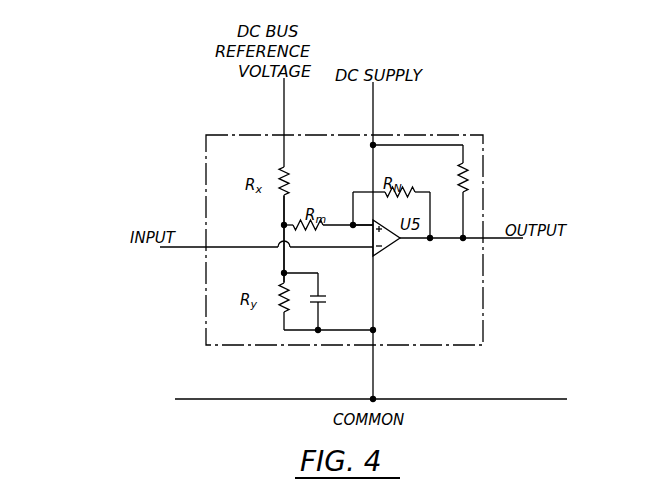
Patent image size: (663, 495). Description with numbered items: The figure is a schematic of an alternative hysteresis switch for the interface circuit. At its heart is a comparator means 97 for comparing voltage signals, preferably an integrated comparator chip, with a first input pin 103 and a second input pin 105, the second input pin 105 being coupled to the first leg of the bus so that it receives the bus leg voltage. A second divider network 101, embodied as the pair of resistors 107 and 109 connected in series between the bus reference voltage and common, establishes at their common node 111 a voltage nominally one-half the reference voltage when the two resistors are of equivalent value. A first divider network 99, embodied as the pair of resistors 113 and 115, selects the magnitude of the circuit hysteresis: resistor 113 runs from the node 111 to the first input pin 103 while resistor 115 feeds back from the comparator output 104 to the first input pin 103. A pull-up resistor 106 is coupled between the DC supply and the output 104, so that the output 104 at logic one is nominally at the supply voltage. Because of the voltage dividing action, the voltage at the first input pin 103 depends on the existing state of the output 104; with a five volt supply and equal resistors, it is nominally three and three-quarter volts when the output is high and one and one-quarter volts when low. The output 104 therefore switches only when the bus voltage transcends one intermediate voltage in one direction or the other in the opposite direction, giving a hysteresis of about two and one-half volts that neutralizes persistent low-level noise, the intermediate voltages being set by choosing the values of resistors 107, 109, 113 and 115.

The means for comparing voltage signals 97 is at (386, 248).
The first divider network 99 is at (357, 186).
The second divider network 101 is at (279, 280).
The first input pin 103 is at (362, 245).
The second input pin 105 is at (371, 226).
The pull-up resistor 106 is at (470, 176).
The resistor 107 is at (283, 167).
The resistor 109 is at (273, 314).
The node 111 is at (287, 223).
The resistor 113 is at (313, 232).
The resistor 115 is at (411, 186).
The comparator means output 104 is at (524, 241).